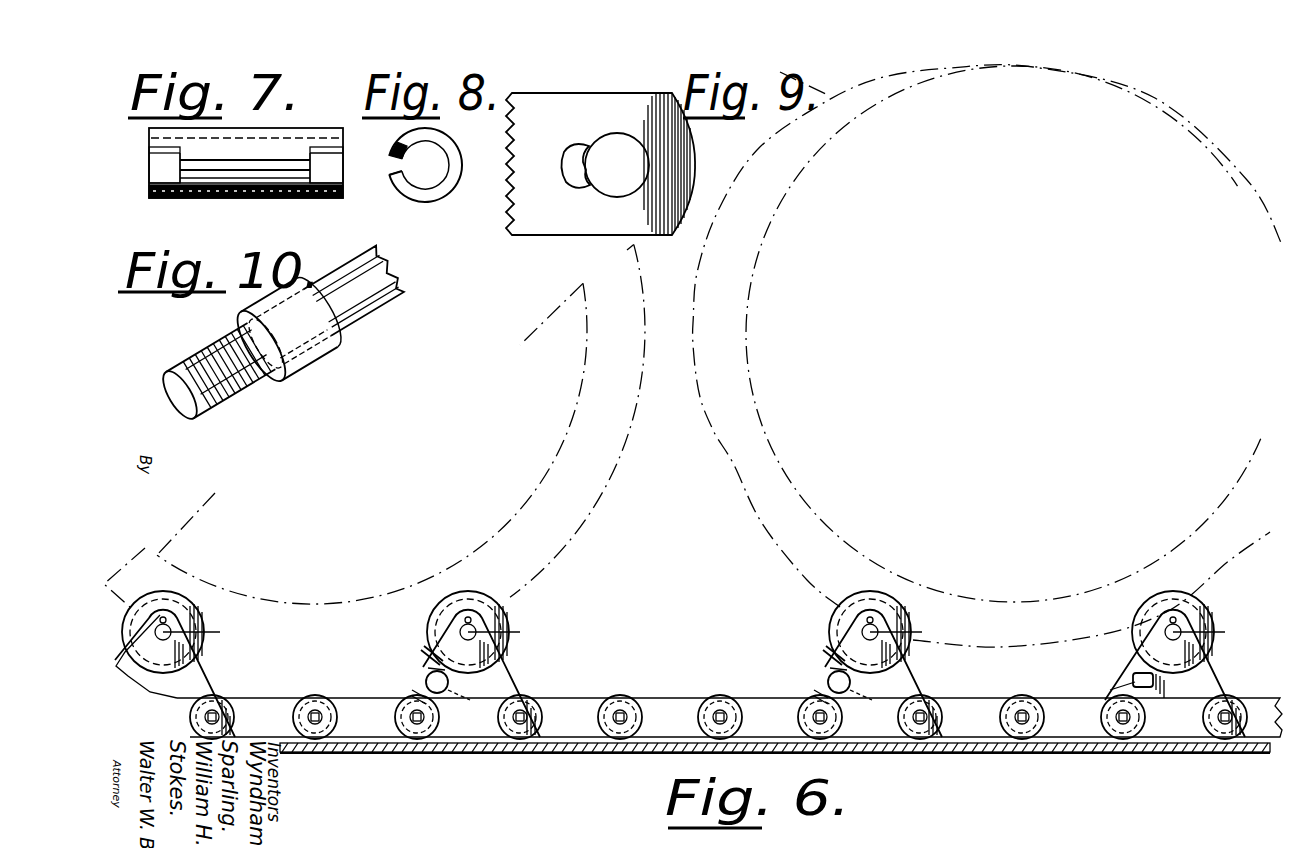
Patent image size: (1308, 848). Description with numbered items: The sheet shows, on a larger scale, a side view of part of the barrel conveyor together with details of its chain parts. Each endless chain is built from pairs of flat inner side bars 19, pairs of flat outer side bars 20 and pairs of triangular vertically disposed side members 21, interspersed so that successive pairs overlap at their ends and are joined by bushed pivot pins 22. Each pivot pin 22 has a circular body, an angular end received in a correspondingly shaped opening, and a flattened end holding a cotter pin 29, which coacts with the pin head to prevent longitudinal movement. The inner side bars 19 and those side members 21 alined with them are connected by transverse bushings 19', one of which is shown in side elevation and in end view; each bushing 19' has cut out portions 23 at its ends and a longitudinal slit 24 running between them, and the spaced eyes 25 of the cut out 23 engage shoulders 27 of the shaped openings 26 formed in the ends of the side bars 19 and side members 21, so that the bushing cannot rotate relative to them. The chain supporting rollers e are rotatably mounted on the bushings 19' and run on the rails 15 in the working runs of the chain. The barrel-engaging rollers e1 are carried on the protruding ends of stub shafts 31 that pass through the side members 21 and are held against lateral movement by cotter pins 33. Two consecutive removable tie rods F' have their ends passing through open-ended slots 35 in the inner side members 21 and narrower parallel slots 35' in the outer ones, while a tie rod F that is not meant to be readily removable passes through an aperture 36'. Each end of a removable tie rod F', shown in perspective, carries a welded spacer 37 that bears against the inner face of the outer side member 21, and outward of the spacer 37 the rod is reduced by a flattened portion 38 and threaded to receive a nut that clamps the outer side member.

In FIG. 6, the rail 15 is at (672, 753).
In FIG. 9, the inner side bar 19 is at (600, 150).
In FIG. 6, the inner side bar 19 is at (742, 709).
In FIG. 7, the bushing 19' is at (246, 150).
In FIG. 8, the bushing 19' is at (437, 158).
In FIG. 6, the outer side bar 20 is at (266, 708).
In FIG. 6, the triangular side member 21 is at (198, 685).
In FIG. 6, the pivot pin 22 is at (222, 717).
In FIG. 7, the cut out portion 23 is at (152, 158).
In FIG. 8, the cut out portion 23 is at (390, 150).
In FIG. 6, the cut out portion 23 is at (622, 708).
In FIG. 7, the longitudinal slit 24 is at (240, 170).
In FIG. 8, the longitudinal slit 24 is at (389, 173).
In FIG. 7, the spaced eye 25 is at (170, 170).
In FIG. 9, the opening 26 is at (617, 165).
In FIG. 9, the shoulder 27 is at (567, 166).
In FIG. 6, the cotter pin 29 is at (410, 717).
In FIG. 6, the stub shaft 31 is at (158, 630).
In FIG. 6, the cotter pin 33 is at (170, 623).
In FIG. 6, the open-ended slot 35 is at (621, 656).
In FIG. 6, the open-ended slot 35' is at (616, 675).
In FIG. 6, the aperture 36' is at (1167, 686).
In FIG. 10, the spacer 37 is at (300, 368).
In FIG. 6, the spacer 37 is at (414, 692).
In FIG. 10, the flattened portion 38 is at (188, 368).
In FIG. 6, the flattened portion 38 is at (655, 682).
In FIG. 6, the chain supporting roller e is at (322, 705).
In FIG. 6, the barrel-engaging roller e1 is at (195, 628).
In FIG. 6, the tie rod F is at (1110, 689).
In FIG. 10, the removable tie rod F' is at (354, 294).
In FIG. 6, the removable tie rod F' is at (660, 705).